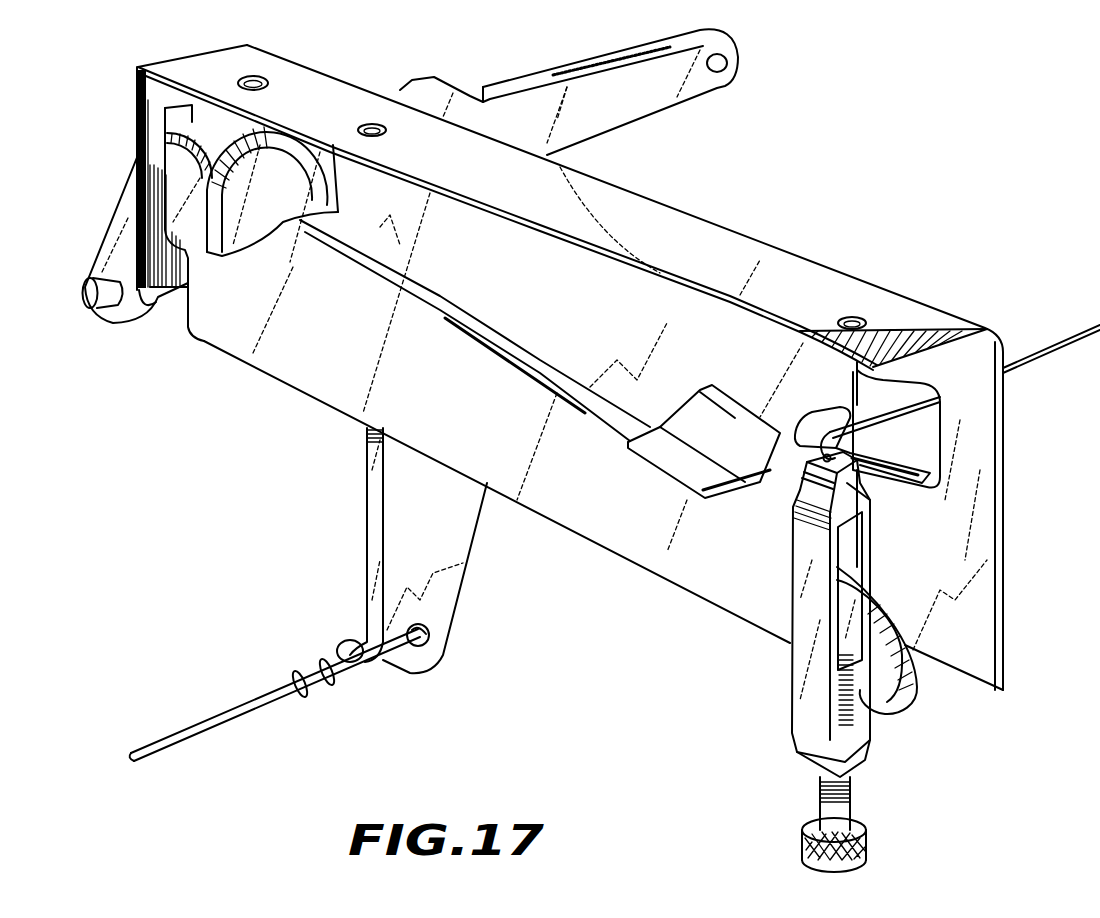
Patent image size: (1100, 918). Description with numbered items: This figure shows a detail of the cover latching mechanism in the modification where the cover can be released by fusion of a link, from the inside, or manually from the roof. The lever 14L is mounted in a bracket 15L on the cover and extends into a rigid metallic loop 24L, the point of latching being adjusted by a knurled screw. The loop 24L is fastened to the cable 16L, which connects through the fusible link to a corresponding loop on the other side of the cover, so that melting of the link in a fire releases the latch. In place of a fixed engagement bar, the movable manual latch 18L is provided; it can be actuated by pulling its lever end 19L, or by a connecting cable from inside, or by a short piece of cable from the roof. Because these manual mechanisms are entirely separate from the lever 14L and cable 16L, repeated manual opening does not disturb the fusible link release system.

The lever 14L is at (303, 370).
The bracket 15L is at (687, 207).
The cable 16L is at (1047, 342).
The manual latch 18L is at (500, 88).
The lever end 19L is at (367, 530).
The rigid metallic loop 24L is at (792, 688).